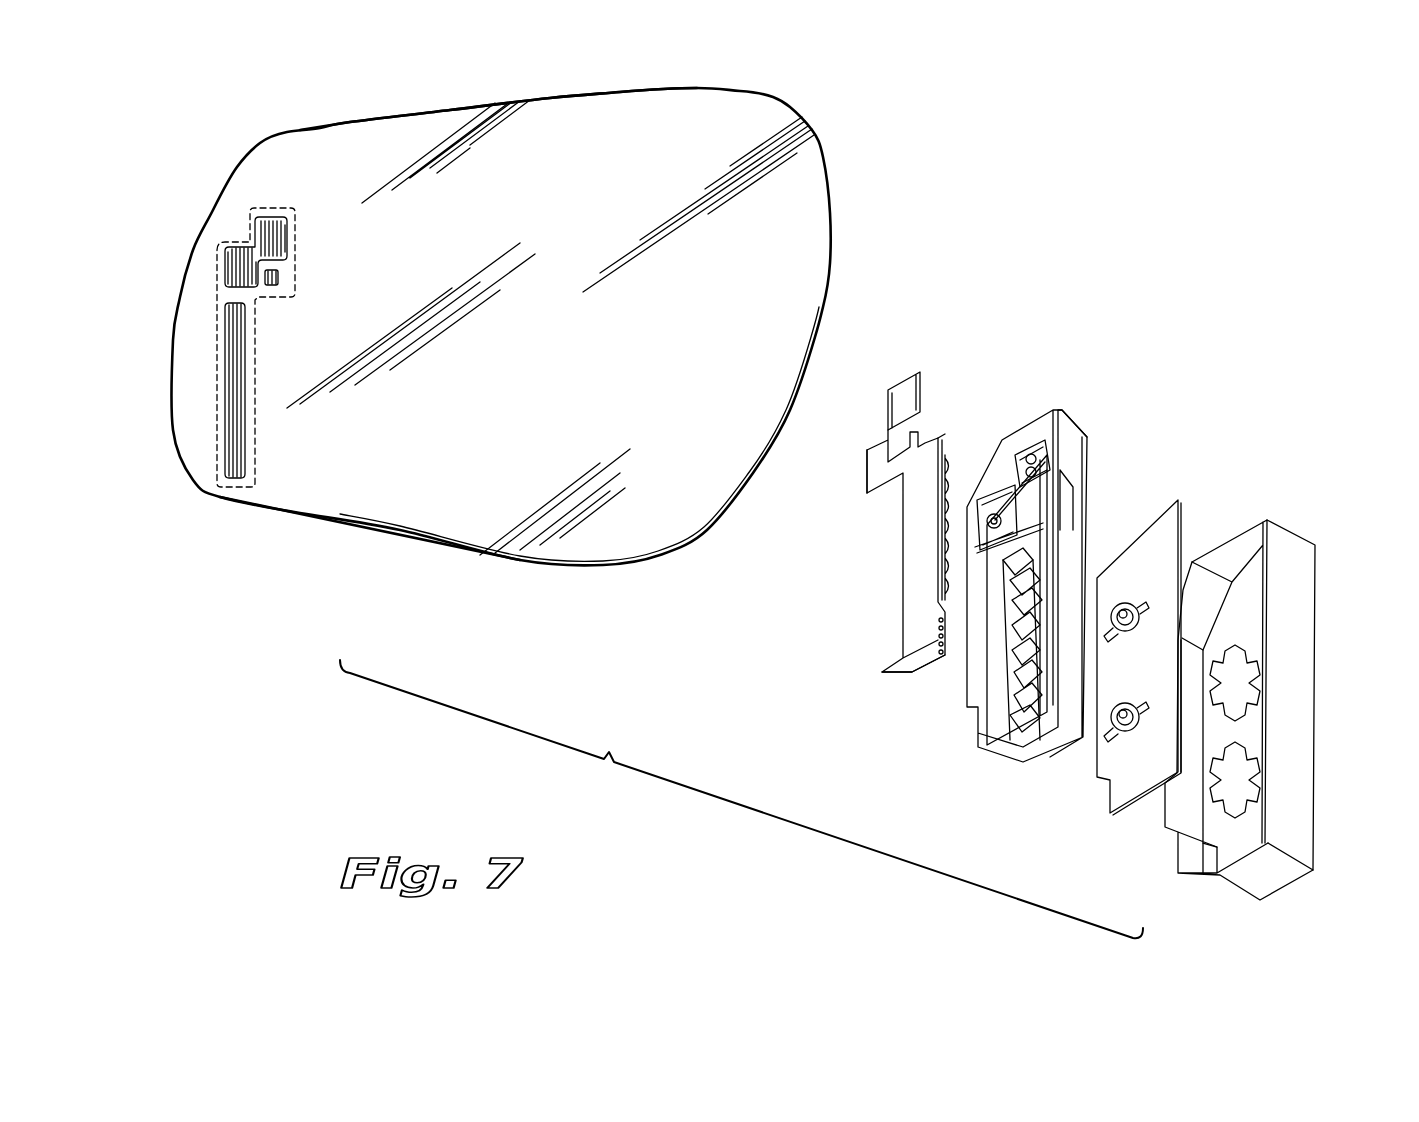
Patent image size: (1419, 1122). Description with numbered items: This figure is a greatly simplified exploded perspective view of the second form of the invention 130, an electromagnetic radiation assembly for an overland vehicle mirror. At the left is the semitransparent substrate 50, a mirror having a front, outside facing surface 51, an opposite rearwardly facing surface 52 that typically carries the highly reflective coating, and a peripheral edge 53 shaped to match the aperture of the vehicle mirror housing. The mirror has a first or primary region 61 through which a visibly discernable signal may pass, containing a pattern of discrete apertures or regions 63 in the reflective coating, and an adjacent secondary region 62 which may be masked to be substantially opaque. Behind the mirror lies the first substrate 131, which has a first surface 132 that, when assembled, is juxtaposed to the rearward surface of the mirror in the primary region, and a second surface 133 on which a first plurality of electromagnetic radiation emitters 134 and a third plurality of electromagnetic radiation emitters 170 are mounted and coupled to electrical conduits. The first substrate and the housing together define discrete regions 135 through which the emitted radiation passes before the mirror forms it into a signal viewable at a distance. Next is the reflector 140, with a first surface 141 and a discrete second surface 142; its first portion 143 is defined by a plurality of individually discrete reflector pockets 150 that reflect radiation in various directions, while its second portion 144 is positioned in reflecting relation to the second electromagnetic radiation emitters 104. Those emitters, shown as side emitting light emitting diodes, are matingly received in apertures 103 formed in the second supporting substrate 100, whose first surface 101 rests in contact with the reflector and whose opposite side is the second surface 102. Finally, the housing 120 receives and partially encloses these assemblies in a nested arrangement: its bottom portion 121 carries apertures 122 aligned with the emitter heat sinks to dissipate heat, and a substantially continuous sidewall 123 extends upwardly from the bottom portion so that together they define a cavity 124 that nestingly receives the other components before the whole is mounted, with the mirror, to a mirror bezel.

The semitransparent substrate 50 is at (514, 347).
The first or outside facing surface 51 is at (400, 483).
The second or rearwardly facing surface 52 is at (830, 260).
The peripheral edge 53 is at (442, 105).
The first or primary region 61 is at (215, 360).
The secondary region 62 is at (694, 386).
The discrete apertures or regions 63 is at (238, 262).
The second supporting substrate 100 is at (1170, 617).
The first surface 101 is at (1153, 523).
The second surface 102 is at (1180, 512).
The apertures 103 is at (1142, 590).
The second electromagnetic radiation emitters 104 is at (1127, 707).
The housing 120 is at (1287, 649).
The bottom portion 121 is at (1245, 595).
The apertures 122 is at (1243, 680).
The sidewall 123 is at (1297, 725).
The cavity 124 is at (1247, 840).
The second form of the invention 130 is at (741, 799).
The first substrate 131 is at (897, 527).
The first surface 132 is at (910, 612).
The second surface 133 is at (937, 663).
The first plurality of electromagnetic radiation emitters 134 is at (948, 560).
The discrete regions 135 is at (937, 430).
The reflector 140 is at (1007, 606).
The first surface 141 is at (1007, 597).
The second surface 142 is at (1095, 580).
The first portion 143 is at (1037, 462).
The second portion 144 is at (1013, 617).
The reflector pockets 150 is at (978, 503).
The third plurality of electromagnetic radiation emitters 170 is at (885, 470).